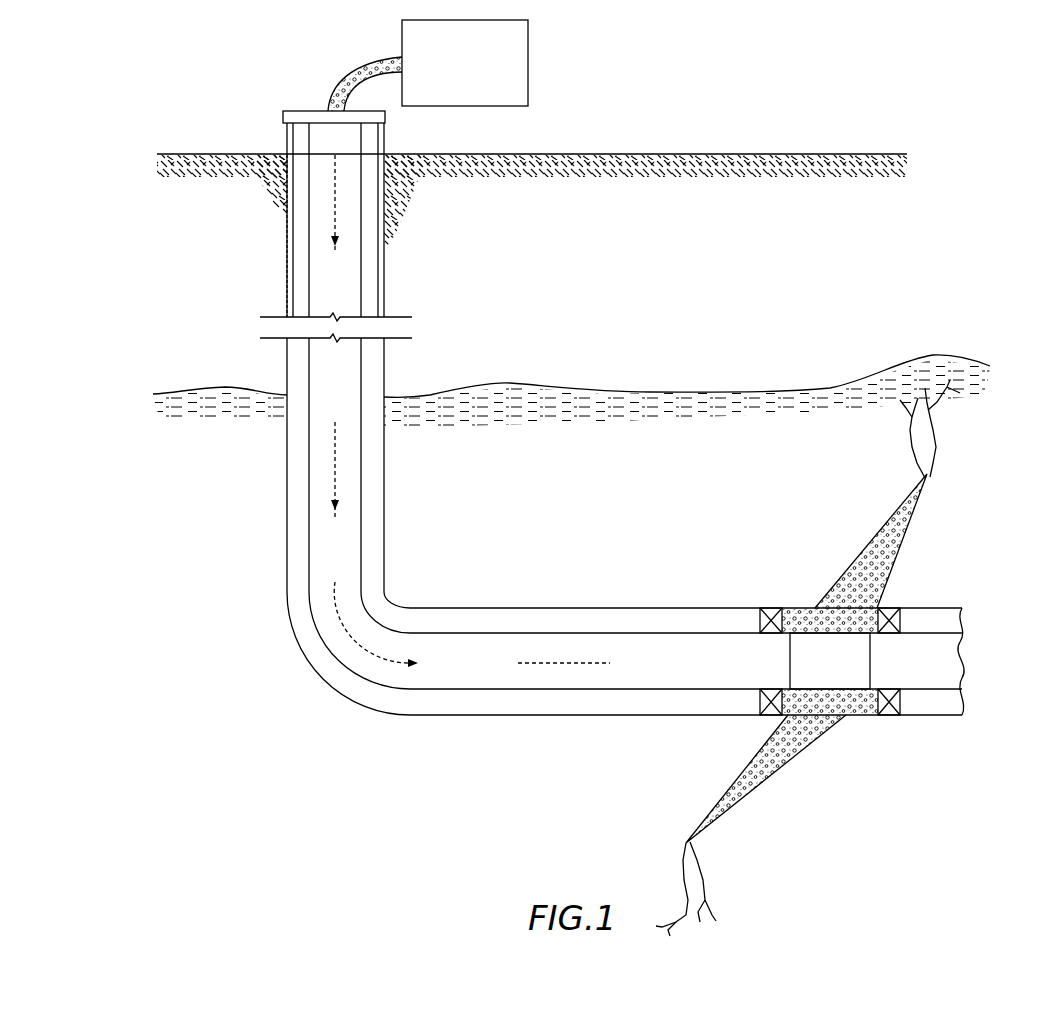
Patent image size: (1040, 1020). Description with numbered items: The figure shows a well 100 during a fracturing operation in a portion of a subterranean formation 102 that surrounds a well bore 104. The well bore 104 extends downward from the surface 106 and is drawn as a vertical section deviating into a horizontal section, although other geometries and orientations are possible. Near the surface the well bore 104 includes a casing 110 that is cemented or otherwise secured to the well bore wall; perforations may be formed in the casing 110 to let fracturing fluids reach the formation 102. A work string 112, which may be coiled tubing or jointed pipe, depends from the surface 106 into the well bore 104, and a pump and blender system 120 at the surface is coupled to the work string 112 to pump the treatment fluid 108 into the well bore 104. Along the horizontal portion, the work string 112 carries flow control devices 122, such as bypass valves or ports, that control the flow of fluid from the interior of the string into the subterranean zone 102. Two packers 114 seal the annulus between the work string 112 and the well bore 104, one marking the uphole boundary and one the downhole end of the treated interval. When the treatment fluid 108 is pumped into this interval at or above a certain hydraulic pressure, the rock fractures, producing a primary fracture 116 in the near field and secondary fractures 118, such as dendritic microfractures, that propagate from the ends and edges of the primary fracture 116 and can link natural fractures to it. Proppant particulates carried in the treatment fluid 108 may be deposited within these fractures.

The well 100 is at (300, 668).
The subterranean formation 102 is at (578, 461).
The well bore 104 is at (298, 226).
The surface 106 is at (768, 153).
The treatment fluid 108 is at (355, 66).
The casing 110 is at (287, 270).
The work string 112 is at (310, 531).
The packers 114 is at (768, 607).
The primary fracture 116 is at (850, 547).
The secondary fractures 118 is at (955, 427).
The pump and blender system 120 is at (483, 73).
The flow control devices 122 is at (848, 672).